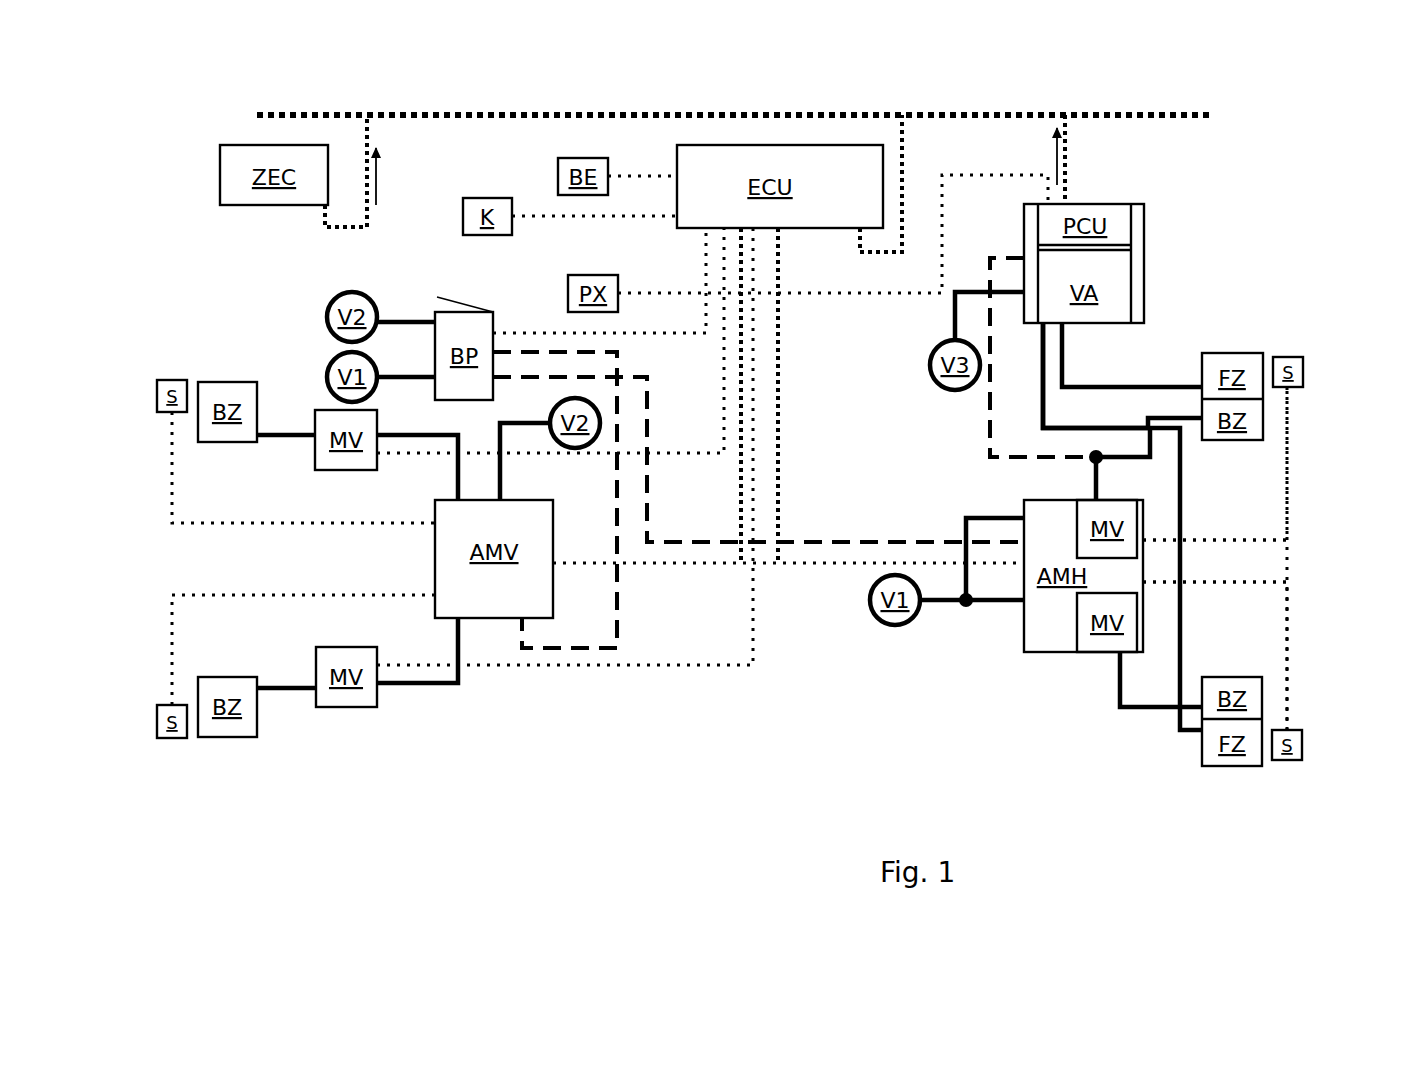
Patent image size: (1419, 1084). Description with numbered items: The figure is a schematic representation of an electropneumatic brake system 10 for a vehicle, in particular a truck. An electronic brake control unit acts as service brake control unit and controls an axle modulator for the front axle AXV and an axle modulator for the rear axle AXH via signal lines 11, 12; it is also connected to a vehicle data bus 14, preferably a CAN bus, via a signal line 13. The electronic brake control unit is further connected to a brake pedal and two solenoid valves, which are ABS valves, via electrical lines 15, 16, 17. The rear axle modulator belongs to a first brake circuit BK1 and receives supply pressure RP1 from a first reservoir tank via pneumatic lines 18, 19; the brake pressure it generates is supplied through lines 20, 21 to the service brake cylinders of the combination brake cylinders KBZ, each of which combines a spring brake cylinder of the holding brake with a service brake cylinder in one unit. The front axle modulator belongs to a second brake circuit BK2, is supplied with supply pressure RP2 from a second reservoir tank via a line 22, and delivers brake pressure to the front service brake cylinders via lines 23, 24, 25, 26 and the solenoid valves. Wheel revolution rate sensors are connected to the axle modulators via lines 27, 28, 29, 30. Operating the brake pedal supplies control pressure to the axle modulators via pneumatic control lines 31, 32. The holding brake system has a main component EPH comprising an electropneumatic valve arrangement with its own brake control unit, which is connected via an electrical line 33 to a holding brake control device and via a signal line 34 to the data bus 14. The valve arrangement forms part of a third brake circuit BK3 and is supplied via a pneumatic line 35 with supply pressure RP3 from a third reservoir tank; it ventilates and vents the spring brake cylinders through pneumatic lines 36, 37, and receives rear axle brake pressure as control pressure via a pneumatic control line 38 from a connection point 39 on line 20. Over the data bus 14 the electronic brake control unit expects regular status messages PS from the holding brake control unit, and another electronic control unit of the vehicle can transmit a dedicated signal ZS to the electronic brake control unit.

The electropneumatic brake system 10 is at (722, 762).
The signal line 11 is at (740, 253).
The signal line 12 is at (780, 252).
The signal line 13 is at (905, 150).
The vehicle data bus 14 is at (530, 118).
The electrical line 15 is at (537, 333).
The electrical line 16 is at (687, 453).
The electrical line 17 is at (753, 650).
The pneumatic line 18 is at (988, 605).
The pneumatic line 19 is at (980, 518).
The line 20 is at (1183, 432).
The line 21 is at (1140, 710).
The line 22 is at (530, 428).
The line 23 is at (425, 432).
The line 24 is at (285, 430).
The line 25 is at (412, 688).
The line 26 is at (283, 695).
The line 27 is at (1290, 492).
The line 28 is at (1290, 635).
The line 29 is at (172, 480).
The line 30 is at (173, 635).
The pneumatic control line 31 is at (620, 625).
The pneumatic control line 32 is at (810, 545).
The electrical line 33 is at (650, 293).
The signal line 34 is at (1070, 148).
The pneumatic line 35 is at (945, 305).
The pneumatic line 36 is at (1133, 387).
The pneumatic line 37 is at (1065, 428).
The pneumatic control line 38 is at (985, 422).
The connection point 39 is at (1090, 462).
The dedicated signal ZS is at (375, 180).
The status message PS is at (1018, 156).
The main component of the holding brake system EPH is at (1145, 255).
The third brake circuit BK3 is at (1225, 270).
The combination brake cylinder KBZ is at (1268, 405).
The rear axle AXH is at (1292, 563).
The front axle AXV is at (202, 560).
The supply pressure RP1 is at (937, 605).
The supply pressure RP2 is at (500, 472).
The supply pressure RP3 is at (952, 325).
The first brake circuit BK1 is at (965, 702).
The second brake circuit BK2 is at (515, 722).